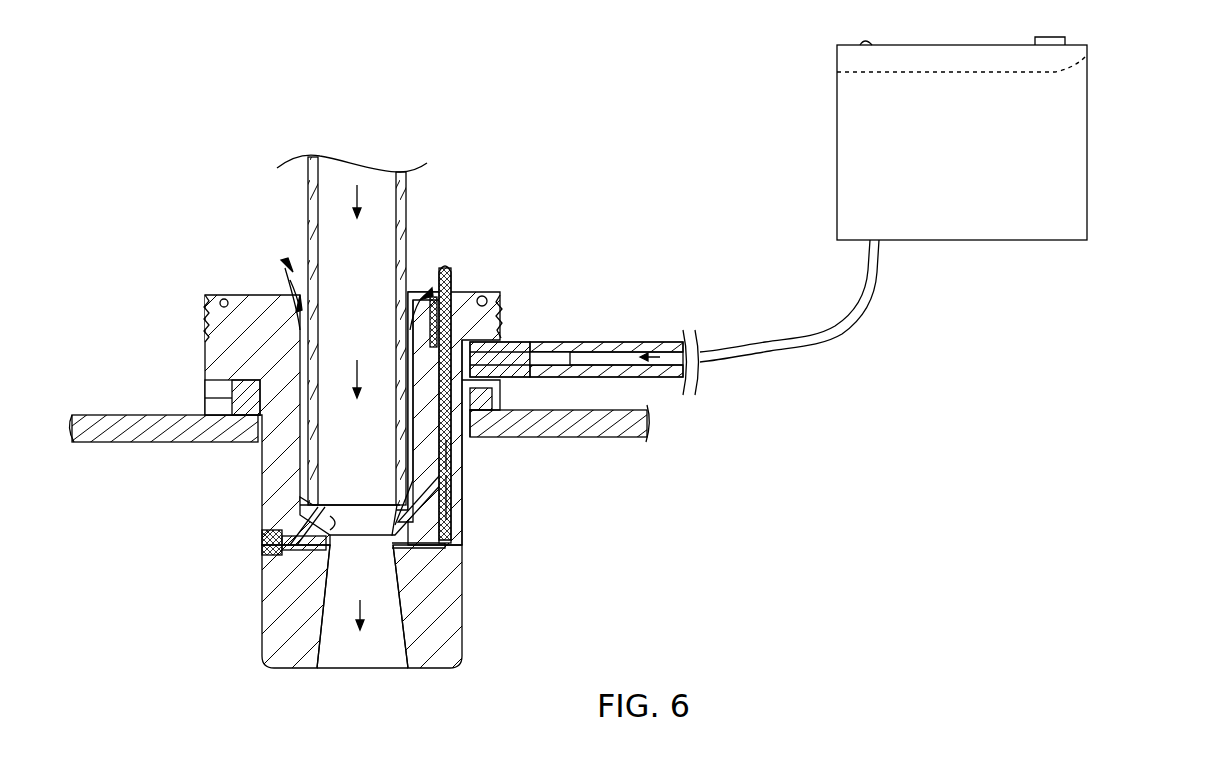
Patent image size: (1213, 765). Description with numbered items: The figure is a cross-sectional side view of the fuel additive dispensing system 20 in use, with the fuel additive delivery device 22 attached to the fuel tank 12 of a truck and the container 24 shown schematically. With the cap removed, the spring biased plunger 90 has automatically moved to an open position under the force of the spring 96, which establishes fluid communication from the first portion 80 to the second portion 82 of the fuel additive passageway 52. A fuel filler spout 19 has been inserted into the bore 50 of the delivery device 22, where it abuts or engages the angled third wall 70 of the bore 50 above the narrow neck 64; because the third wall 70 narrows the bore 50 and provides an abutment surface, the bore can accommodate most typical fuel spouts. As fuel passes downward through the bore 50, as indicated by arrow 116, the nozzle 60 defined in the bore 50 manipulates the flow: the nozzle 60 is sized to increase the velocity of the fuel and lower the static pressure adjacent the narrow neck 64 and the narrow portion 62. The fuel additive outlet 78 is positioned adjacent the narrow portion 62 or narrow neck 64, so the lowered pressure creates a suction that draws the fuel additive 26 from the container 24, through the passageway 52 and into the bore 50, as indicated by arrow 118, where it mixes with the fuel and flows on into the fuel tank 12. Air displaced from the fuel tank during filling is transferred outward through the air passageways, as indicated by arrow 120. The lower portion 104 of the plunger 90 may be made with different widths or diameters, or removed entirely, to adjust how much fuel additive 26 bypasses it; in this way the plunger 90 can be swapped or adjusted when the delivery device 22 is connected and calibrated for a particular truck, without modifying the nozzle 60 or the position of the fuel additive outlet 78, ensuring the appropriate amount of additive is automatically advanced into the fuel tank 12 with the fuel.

The fuel tank 12 is at (108, 415).
The fuel filler spout 19 is at (406, 180).
The fuel additive dispensing system 20 is at (108, 120).
The fuel additive delivery device 22 is at (156, 352).
The container 24 is at (1087, 128).
The fuel additive 26 is at (1087, 55).
The bore 50 is at (333, 674).
The fuel additive passageway 52 is at (455, 494).
The nozzle 60 is at (394, 518).
The narrow portion 62 is at (354, 560).
The narrow neck 64 is at (268, 538).
The third wall 70 is at (340, 516).
The fuel additive outlet 78 is at (389, 551).
The first portion 80 is at (538, 345).
The second portion 82 is at (472, 450).
The plunger 90 is at (458, 273).
The spring 96 is at (495, 316).
The lower portion 104 is at (502, 392).
The arrow 116 is at (360, 390).
The arrow 118 is at (646, 348).
The arrow 120 is at (290, 278).